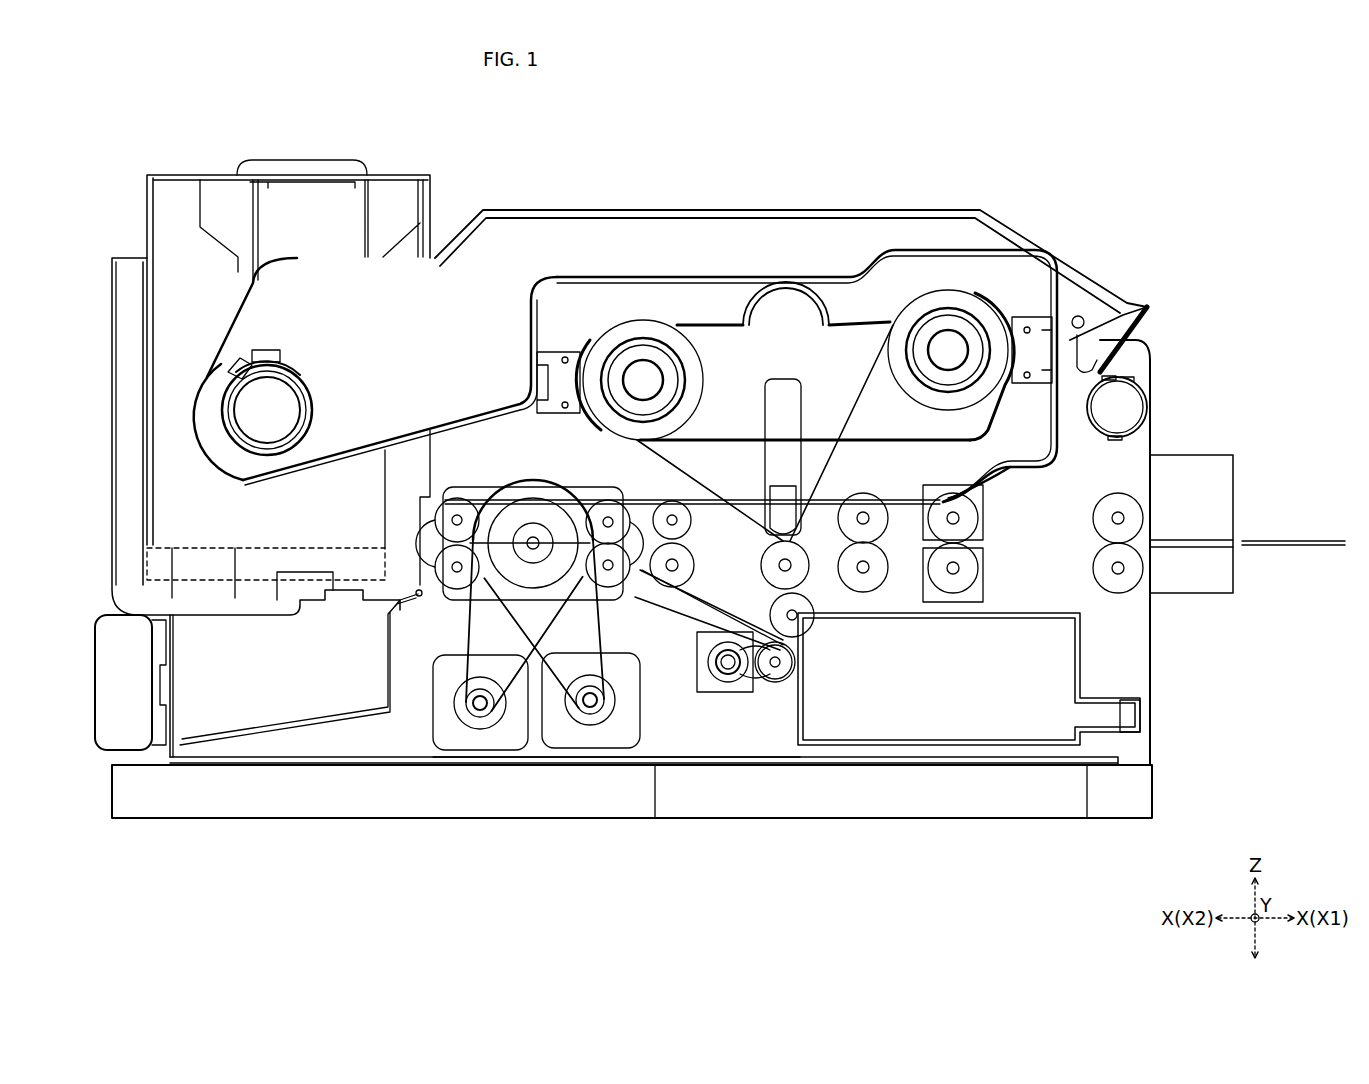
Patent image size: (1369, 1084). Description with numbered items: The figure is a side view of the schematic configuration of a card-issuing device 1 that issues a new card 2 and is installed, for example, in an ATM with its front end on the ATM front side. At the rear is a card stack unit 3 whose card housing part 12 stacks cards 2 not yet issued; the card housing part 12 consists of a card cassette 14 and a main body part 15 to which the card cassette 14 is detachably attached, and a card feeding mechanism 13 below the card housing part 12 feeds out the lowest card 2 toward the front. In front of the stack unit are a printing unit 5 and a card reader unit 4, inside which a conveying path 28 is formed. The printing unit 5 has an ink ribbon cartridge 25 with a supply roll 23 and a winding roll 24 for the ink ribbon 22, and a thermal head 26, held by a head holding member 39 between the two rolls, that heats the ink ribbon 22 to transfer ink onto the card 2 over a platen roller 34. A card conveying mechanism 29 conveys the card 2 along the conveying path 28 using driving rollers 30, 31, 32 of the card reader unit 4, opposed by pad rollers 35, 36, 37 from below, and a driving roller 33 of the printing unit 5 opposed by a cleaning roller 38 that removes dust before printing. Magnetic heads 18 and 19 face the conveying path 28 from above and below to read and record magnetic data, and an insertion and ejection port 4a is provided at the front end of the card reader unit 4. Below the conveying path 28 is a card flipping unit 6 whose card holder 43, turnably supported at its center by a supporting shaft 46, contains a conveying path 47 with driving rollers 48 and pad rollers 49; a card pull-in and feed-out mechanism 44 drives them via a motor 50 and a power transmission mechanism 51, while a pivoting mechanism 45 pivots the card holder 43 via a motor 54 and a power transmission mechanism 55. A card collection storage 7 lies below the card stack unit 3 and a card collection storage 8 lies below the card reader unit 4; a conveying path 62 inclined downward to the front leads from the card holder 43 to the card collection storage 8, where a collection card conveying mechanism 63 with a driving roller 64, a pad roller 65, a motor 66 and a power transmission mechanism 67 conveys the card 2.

The card-issuing device 1 is at (1094, 206).
The card 2 is at (1308, 540).
The card stack unit 3 is at (394, 173).
The card reader unit 4 is at (1187, 418).
The insertion and ejection port 4a is at (1235, 540).
The printing unit 5 is at (855, 232).
The card flipping unit 6 is at (518, 400).
The card collection storage 7 is at (308, 740).
The card collection storage 8 is at (918, 752).
The card housing part 12 is at (180, 173).
The card feeding mechanism 13 is at (228, 548).
The card cassette 14 is at (196, 173).
The main body part 15 is at (112, 316).
The magnetic head 18 is at (983, 500).
The magnetic head 19 is at (983, 568).
The ink ribbon 22 is at (865, 400).
The supply roll 23 is at (948, 290).
The winding roll 24 is at (640, 320).
The ink ribbon cartridge 25 is at (707, 277).
The thermal head 26 is at (775, 486).
The conveying path 28 is at (908, 513).
The card conveying mechanism 29 is at (1175, 615).
The driving roller 30 is at (1103, 497).
The driving roller 31 is at (978, 520).
The driving roller 32 is at (863, 493).
The driving roller 33 is at (698, 572).
The platen roller 34 is at (760, 565).
The pad roller 35 is at (1120, 595).
The pad roller 36 is at (955, 603).
The pad roller 37 is at (866, 593).
The cleaning roller 38 is at (693, 520).
The head holding member 39 is at (785, 378).
The card holder 43 is at (480, 485).
The card pull-in and feed-out mechanism 44 is at (664, 753).
The pivoting mechanism 45 is at (421, 778).
The supporting shaft 46 is at (520, 570).
The conveying path 47 is at (512, 490).
The driving roller 48 is at (605, 500).
The pad roller 49 is at (612, 588).
The motor 50 is at (594, 750).
The power transmission mechanism 51 is at (635, 692).
The motor 54 is at (480, 750).
The power transmission mechanism 55 is at (450, 693).
The conveying path 62 is at (688, 598).
The collection card conveying mechanism 63 is at (826, 682).
The driving roller 64 is at (772, 685).
The pad roller 65 is at (800, 636).
The motor 66 is at (722, 694).
The power transmission mechanism 67 is at (760, 703).